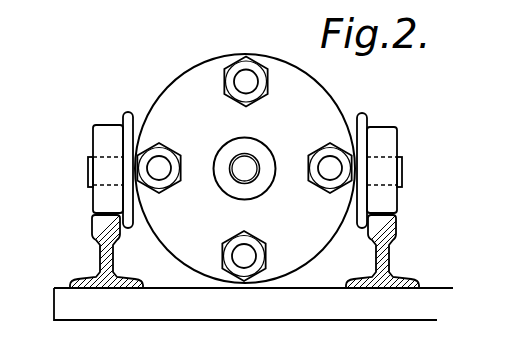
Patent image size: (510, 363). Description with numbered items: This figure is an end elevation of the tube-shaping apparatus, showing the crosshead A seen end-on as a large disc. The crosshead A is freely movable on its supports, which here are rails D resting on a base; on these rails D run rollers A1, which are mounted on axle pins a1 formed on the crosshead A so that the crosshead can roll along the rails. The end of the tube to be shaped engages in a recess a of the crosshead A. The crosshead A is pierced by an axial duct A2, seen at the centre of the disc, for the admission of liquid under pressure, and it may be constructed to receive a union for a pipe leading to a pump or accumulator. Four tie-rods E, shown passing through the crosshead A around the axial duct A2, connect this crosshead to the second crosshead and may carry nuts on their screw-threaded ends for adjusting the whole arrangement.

The crosshead A is at (326, 112).
The rollers A1 is at (110, 135).
The axial duct A2 is at (240, 173).
The recess a is at (402, 180).
The axle pins a1 is at (90, 176).
The rails D is at (96, 251).
The tie-rods E is at (245, 77).